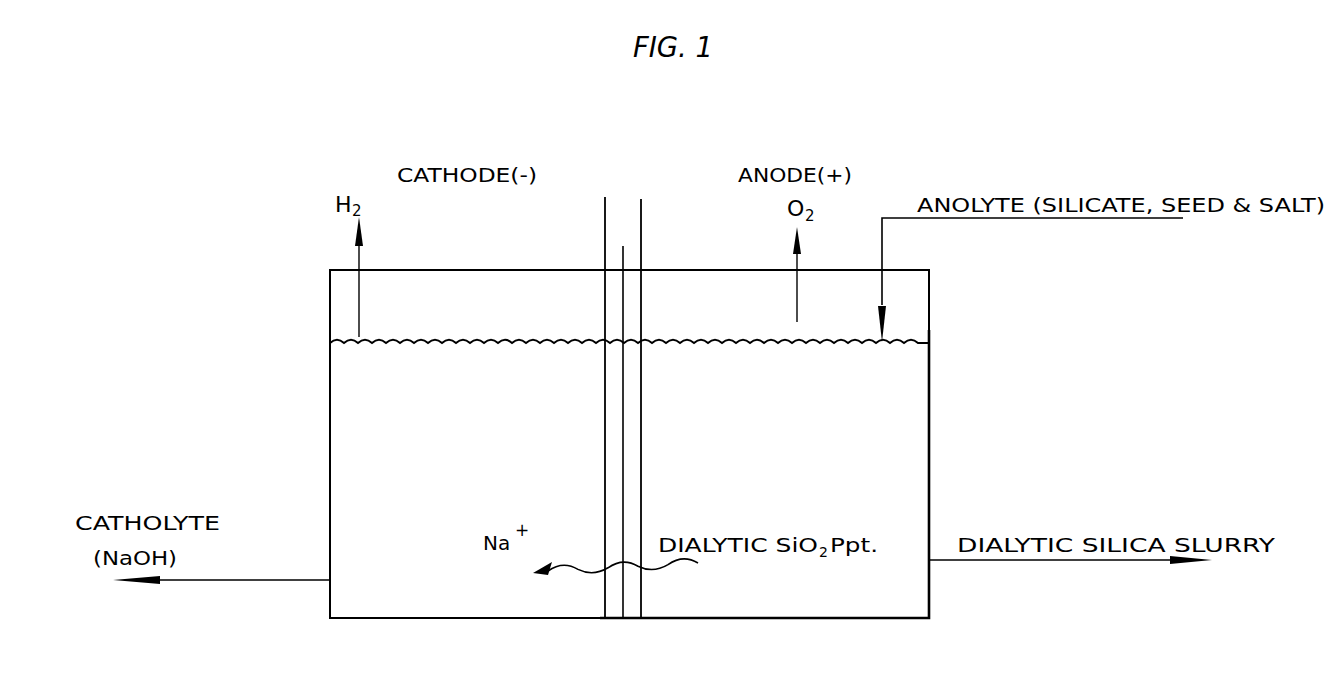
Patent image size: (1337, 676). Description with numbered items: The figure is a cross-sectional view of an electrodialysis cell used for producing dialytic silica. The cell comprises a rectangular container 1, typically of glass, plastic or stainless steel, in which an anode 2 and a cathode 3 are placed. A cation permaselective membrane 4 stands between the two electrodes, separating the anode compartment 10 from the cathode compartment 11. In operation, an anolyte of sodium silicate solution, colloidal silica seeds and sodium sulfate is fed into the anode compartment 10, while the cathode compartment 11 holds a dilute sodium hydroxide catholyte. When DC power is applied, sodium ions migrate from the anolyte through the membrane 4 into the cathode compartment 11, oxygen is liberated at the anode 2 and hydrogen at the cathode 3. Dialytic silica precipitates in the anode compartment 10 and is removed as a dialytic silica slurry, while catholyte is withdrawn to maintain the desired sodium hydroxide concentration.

The container 1 is at (929, 482).
The anode 2 is at (641, 230).
The cathode 3 is at (605, 230).
The cation permaselective membrane 4 is at (623, 313).
The anode compartment 10 is at (803, 447).
The cathode compartment 11 is at (483, 447).